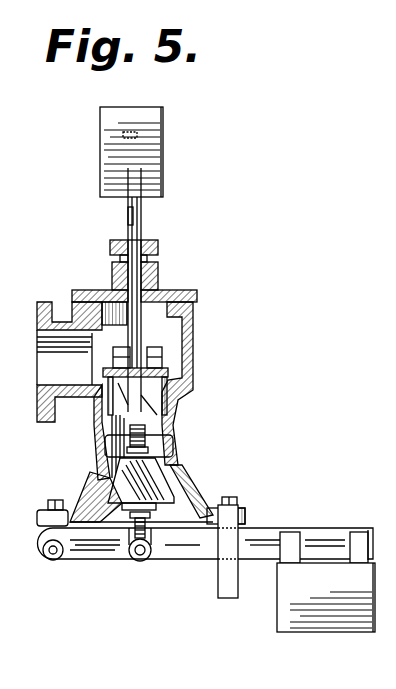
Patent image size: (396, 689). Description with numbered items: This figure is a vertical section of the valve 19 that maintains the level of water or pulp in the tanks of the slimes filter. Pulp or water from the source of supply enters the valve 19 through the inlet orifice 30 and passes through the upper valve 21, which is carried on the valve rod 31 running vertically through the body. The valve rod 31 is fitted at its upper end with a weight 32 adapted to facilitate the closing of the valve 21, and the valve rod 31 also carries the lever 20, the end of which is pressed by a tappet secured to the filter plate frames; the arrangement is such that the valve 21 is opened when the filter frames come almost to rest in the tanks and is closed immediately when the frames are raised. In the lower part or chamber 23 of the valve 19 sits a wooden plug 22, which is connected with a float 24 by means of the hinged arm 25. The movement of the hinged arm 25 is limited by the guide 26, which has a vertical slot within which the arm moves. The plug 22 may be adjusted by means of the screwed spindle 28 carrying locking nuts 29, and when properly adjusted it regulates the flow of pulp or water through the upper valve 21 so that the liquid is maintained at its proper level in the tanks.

The valve 19 is at (193, 382).
The lever 20 is at (142, 217).
The valve 21 is at (165, 370).
The wooden plug 22 is at (158, 491).
The lower part or chamber 23 is at (176, 437).
The float 24 is at (326, 597).
The hinged arm 25 is at (185, 559).
The guide 26 is at (229, 598).
The screwed spindle 28 is at (135, 532).
The locking nuts 29 is at (123, 512).
The inlet orifice 30 is at (50, 349).
The valve rod 31 is at (150, 273).
The weight 32 is at (162, 151).